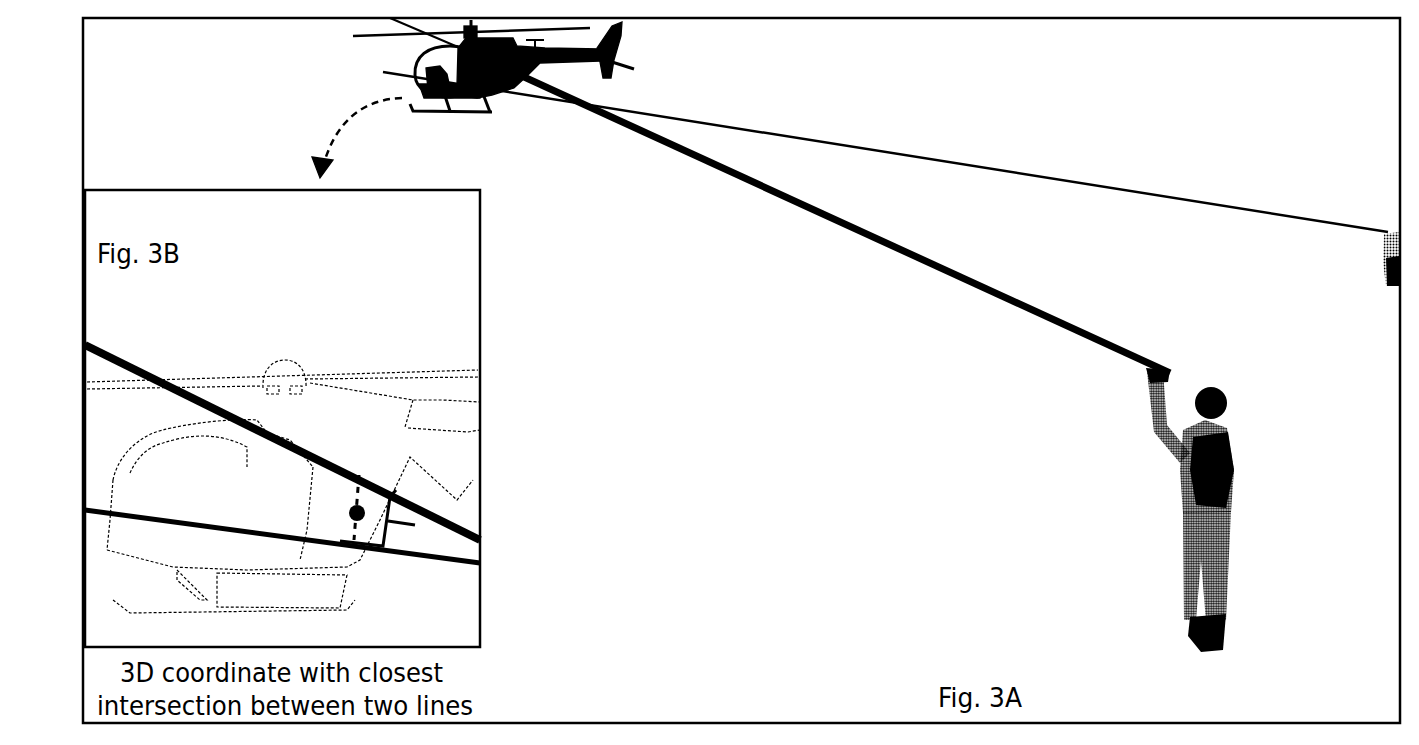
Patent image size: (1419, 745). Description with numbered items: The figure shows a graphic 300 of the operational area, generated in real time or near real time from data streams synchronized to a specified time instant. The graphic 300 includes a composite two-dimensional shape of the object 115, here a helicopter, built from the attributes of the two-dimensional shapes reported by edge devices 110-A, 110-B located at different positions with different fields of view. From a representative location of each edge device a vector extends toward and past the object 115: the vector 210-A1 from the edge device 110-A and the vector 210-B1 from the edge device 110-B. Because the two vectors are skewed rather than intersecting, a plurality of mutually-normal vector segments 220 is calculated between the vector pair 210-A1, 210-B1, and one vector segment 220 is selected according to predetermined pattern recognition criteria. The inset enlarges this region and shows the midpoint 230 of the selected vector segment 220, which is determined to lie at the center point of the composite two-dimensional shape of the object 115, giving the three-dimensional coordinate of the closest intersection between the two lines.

In FIG. 3A, the graphic 300 is at (822, 601).
In FIG. 3A, the object 115 is at (497, 108).
In FIG. 3A, the vector 210-A1 is at (1017, 168).
In FIG. 3B, the vector 210-A1 is at (467, 575).
In FIG. 3A, the vector 210-B1 is at (967, 290).
In FIG. 3B, the vector 210-B1 is at (455, 528).
In FIG. 3A, the edge device 110-A is at (1392, 227).
In FIG. 3A, the edge device 110-B is at (1167, 480).
In FIG. 3B, the midpoint 230 is at (352, 500).
In FIG. 3B, the vector segment 220 is at (410, 530).